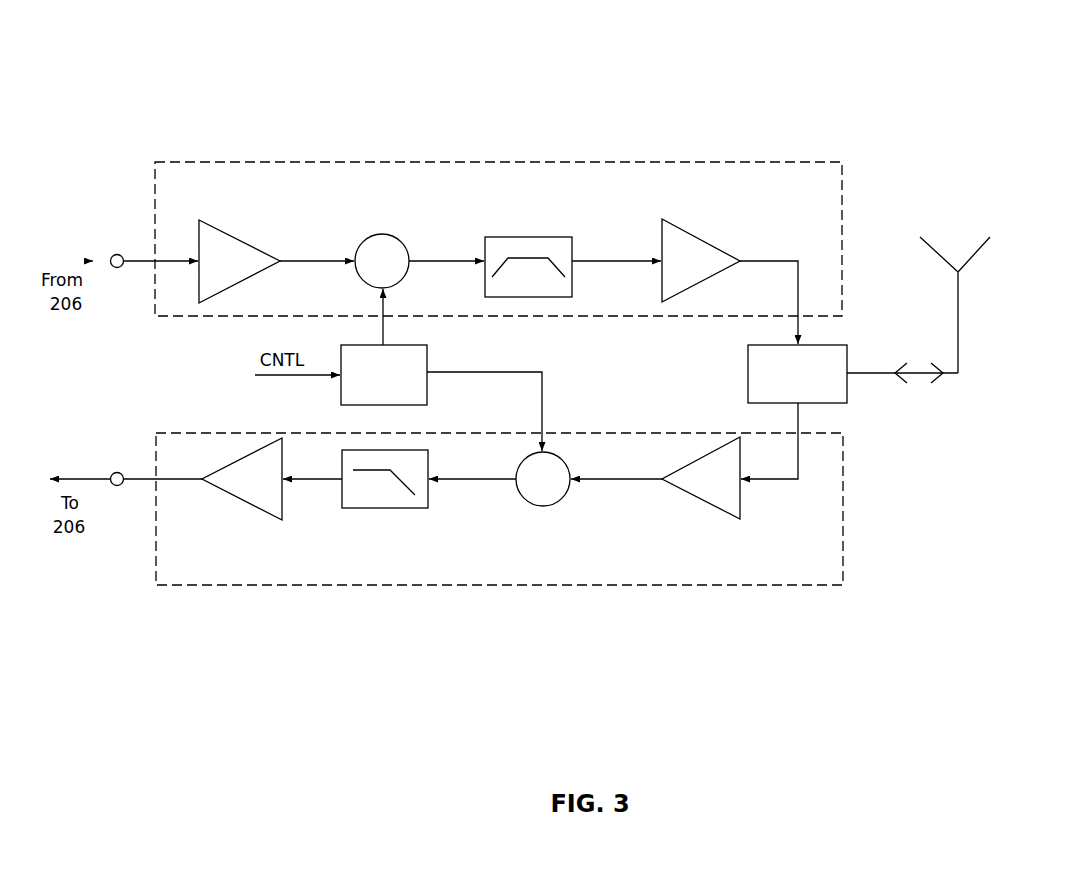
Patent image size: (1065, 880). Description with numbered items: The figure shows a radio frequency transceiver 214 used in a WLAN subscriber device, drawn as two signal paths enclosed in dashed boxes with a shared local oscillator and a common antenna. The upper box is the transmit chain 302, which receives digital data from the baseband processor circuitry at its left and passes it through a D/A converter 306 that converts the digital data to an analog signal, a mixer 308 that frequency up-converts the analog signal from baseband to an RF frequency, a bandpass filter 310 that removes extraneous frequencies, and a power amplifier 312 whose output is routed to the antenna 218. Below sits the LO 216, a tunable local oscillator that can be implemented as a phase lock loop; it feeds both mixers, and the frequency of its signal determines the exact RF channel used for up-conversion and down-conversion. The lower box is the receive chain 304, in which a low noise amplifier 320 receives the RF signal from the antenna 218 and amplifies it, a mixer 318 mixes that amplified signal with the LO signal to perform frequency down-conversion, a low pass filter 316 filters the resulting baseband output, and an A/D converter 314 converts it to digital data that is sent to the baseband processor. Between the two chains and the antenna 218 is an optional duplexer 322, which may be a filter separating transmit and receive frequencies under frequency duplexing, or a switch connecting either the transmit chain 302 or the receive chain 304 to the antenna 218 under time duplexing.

The RF transceiver 214 is at (145, 89).
The LO 216 is at (428, 350).
The antenna 218 is at (958, 297).
The transmit chain 302 is at (843, 163).
The receive chain 304 is at (843, 568).
The D/A converter 306 is at (250, 243).
The mixer 308 is at (383, 232).
The bandpass filter 310 is at (575, 246).
The power amplifier 312 is at (712, 237).
The A/D converter 314 is at (250, 505).
The low pass filter 316 is at (352, 510).
The mixer 318 is at (562, 500).
The low noise amplifier 320 is at (742, 507).
The duplexer 322 is at (848, 395).